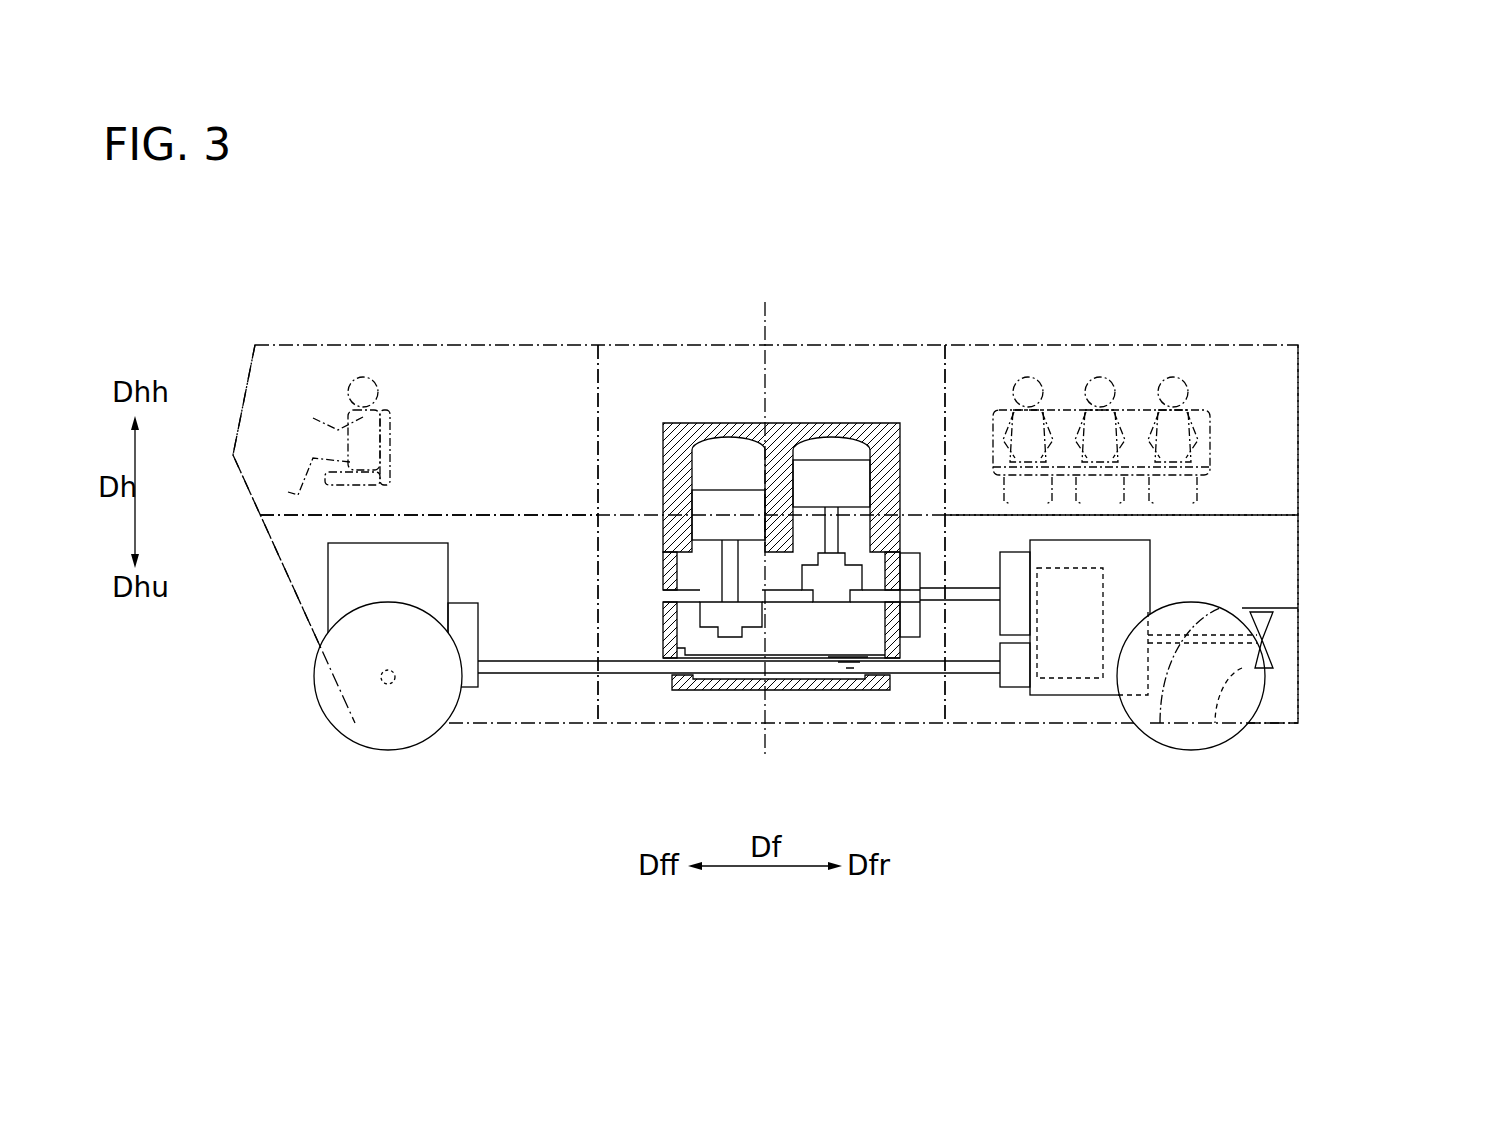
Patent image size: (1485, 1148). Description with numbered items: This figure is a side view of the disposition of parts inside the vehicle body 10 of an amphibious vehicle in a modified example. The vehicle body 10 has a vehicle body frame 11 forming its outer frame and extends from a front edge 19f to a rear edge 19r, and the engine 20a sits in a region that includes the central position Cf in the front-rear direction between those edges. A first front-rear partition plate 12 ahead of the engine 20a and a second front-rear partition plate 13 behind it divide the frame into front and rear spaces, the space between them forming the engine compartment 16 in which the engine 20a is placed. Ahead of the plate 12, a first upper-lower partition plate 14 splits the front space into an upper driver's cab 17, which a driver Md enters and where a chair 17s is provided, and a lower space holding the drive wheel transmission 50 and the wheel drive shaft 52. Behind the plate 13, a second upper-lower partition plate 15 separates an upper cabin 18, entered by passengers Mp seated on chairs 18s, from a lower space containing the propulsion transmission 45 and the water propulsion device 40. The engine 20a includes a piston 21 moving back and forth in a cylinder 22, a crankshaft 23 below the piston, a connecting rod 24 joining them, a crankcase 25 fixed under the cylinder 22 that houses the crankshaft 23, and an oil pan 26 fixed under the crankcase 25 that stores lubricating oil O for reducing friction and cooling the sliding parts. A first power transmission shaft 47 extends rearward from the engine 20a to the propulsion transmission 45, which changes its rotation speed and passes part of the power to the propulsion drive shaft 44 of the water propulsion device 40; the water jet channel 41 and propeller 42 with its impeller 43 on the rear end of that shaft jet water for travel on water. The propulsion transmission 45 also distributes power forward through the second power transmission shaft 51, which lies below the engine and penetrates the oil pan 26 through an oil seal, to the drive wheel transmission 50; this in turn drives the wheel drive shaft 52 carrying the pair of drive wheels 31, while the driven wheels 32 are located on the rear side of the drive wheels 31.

The vehicle body 10 is at (263, 332).
The vehicle body frame 11 is at (1298, 345).
The first front-rear partition plate 12 is at (598, 380).
The second front-rear partition plate 13 is at (945, 383).
The first upper-lower partition plate 14 is at (534, 510).
The second upper-lower partition plate 15 is at (1232, 513).
The engine compartment 16 is at (795, 375).
The driver's cab 17 is at (465, 395).
The chair 17s is at (397, 420).
The cabin 18 is at (1233, 370).
The chairs 18s is at (1140, 398).
The front edge 19f is at (232, 455).
The rear edge 19r is at (1298, 375).
The engine 20a is at (730, 514).
The piston 21 is at (833, 475).
The cylinder 22 is at (872, 440).
The crankshaft 23 is at (793, 597).
The connecting rod 24 is at (732, 567).
The crankcase 25 is at (663, 568).
The oil pan 26 is at (838, 690).
The drive wheels 31 is at (318, 712).
The driven wheels 32 is at (1250, 745).
The water propulsion device 40 is at (1313, 644).
The water jet channel 41 is at (1242, 668).
The propeller 42 is at (1288, 616).
The impeller 43 is at (1315, 640).
The propulsion drive shaft 44 is at (1220, 608).
The propulsion transmission 45 is at (1045, 708).
The first power transmission shaft 47 is at (965, 562).
The drive wheel transmission 50 is at (320, 599).
The second power transmission shaft 51 is at (510, 675).
The wheel drive shaft 52 is at (386, 684).
The driver Md is at (357, 378).
The passengers Mp is at (1168, 398).
The central position in the front-rear direction Cf is at (765, 318).
The lubricating oil O is at (862, 660).